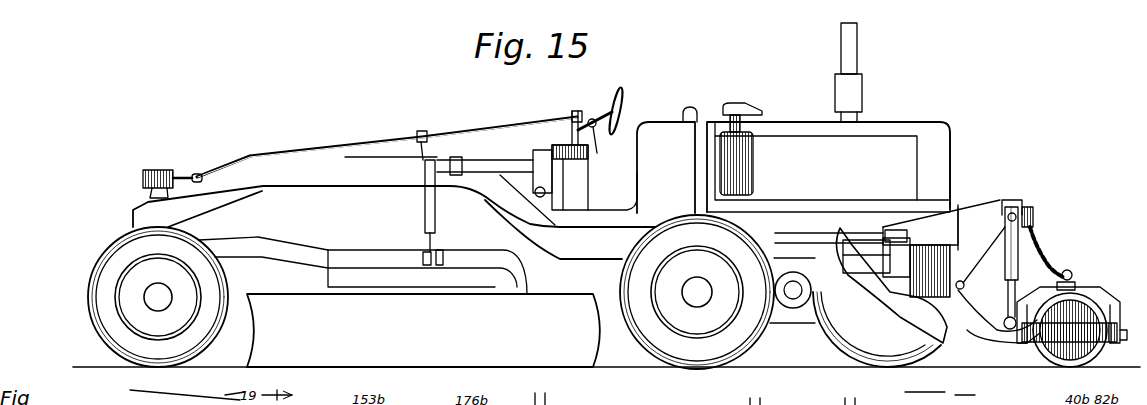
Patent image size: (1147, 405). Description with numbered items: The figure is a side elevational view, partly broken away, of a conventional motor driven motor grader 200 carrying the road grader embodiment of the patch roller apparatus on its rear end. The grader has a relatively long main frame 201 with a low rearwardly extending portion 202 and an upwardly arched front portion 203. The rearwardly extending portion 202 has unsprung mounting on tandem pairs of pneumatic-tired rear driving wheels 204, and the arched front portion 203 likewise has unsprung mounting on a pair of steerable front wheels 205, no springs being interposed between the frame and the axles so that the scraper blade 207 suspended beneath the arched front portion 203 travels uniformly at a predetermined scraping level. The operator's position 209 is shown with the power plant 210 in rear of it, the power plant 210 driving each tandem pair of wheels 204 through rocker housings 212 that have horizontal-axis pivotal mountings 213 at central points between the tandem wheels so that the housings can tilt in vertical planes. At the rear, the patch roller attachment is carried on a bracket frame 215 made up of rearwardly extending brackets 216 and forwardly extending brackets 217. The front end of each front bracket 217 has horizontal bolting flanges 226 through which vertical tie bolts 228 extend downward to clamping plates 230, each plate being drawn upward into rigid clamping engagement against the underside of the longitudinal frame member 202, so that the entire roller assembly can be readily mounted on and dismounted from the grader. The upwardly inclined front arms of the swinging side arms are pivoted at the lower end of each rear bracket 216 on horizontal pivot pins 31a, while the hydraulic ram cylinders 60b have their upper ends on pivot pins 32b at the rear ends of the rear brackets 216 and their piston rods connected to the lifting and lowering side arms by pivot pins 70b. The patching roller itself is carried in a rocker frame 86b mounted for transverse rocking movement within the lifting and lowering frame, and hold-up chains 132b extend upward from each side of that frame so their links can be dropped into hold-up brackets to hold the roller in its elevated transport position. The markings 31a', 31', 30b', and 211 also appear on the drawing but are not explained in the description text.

The motor grader 200 is at (398, 117).
The main frame 201 is at (506, 227).
The rearwardly extending portion 202 is at (813, 247).
The upwardly arched front portion 203 is at (325, 185).
The rear driving wheels 204 is at (873, 360).
The front wheels 205 is at (87, 283).
The scraper blade 207 is at (423, 330).
The operator's position 209 is at (663, 120).
The power plant 210 is at (798, 150).
The exhaust stack 211 is at (941, 119).
The rocker housings 212 is at (808, 324).
The pivotal mountings 213 is at (792, 300).
The bracket frame 215 is at (955, 200).
The rearwardly extending brackets 216 is at (972, 210).
The forwardly extending brackets 217 is at (940, 220).
The bolting flanges 226 is at (893, 230).
The tie bolts 228 is at (905, 258).
The clamping plates 230 is at (880, 262).
The pivot pins 31a is at (984, 255).
The curved shield arm 31a' is at (899, 285).
The lower arm 31' is at (993, 345).
The pivot pins 32b is at (1012, 205).
The hydraulic ram cylinders 60b is at (1005, 246).
The pivot pin 70b is at (996, 306).
The rocker frame 86b is at (1070, 330).
The hold-up chains 132b is at (1040, 258).
The roller frame 30b' is at (1056, 318).